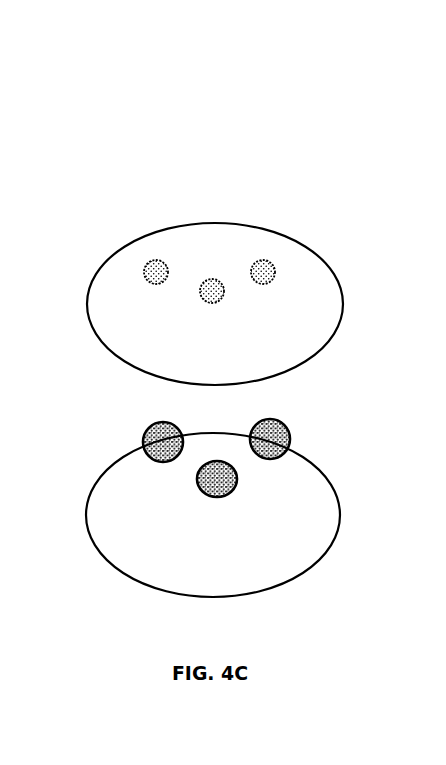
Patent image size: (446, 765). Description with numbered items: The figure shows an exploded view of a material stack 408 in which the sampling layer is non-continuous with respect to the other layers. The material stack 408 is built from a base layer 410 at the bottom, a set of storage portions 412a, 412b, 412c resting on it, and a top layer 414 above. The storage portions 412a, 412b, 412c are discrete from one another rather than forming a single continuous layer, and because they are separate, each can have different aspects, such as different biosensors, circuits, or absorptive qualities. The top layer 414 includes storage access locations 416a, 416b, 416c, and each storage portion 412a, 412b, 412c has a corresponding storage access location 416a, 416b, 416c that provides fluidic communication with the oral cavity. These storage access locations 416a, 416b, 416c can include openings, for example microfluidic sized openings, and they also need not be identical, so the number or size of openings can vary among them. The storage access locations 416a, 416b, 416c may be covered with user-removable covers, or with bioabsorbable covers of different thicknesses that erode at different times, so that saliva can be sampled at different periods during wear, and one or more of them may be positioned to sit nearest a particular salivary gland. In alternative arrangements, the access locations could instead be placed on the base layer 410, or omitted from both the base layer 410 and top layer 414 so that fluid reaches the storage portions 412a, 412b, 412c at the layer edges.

The material stack 408 is at (169, 84).
The base layer 410 is at (320, 543).
The storage portion 412a is at (148, 442).
The storage portion 412b is at (232, 481).
The storage portion 412c is at (280, 434).
The top layer 414 is at (310, 303).
The storage access location 416a is at (152, 264).
The storage access location 416b is at (214, 287).
The storage access location 416c is at (266, 269).